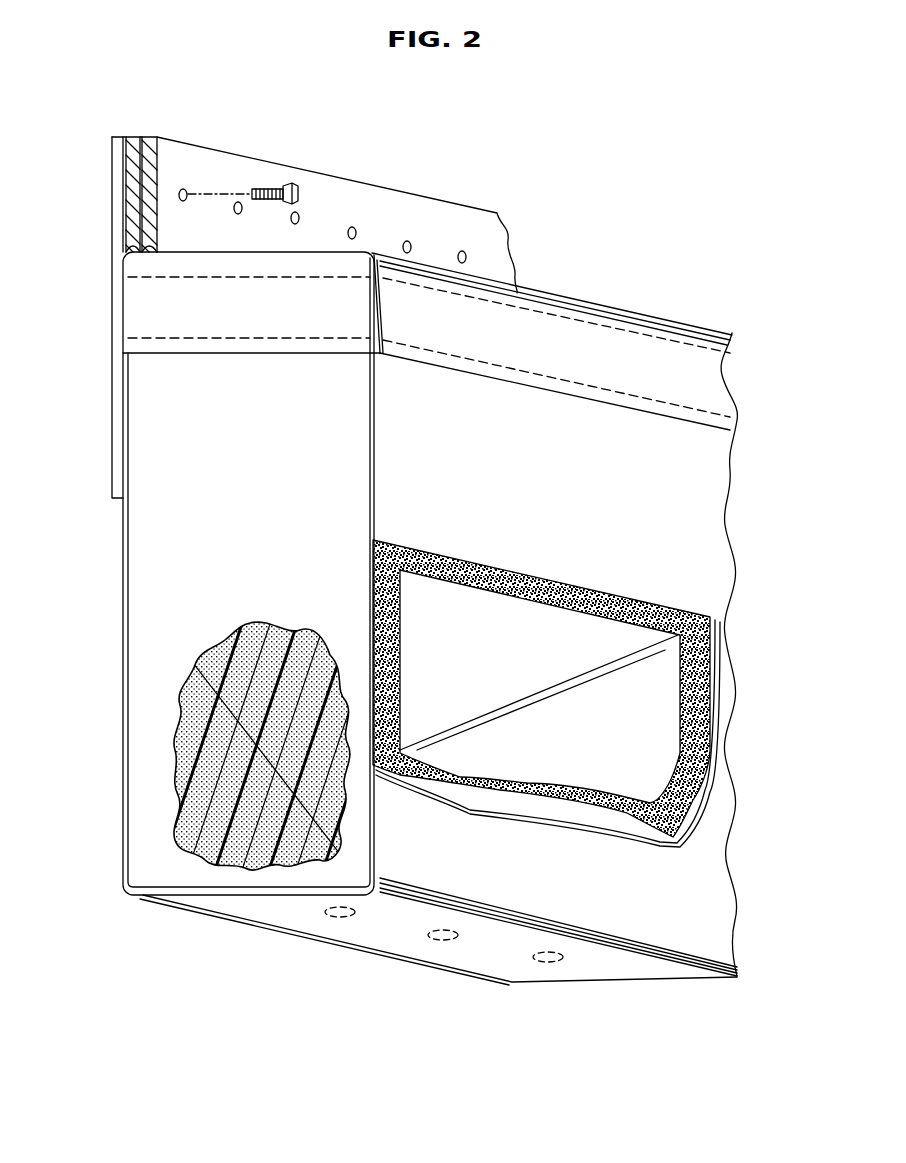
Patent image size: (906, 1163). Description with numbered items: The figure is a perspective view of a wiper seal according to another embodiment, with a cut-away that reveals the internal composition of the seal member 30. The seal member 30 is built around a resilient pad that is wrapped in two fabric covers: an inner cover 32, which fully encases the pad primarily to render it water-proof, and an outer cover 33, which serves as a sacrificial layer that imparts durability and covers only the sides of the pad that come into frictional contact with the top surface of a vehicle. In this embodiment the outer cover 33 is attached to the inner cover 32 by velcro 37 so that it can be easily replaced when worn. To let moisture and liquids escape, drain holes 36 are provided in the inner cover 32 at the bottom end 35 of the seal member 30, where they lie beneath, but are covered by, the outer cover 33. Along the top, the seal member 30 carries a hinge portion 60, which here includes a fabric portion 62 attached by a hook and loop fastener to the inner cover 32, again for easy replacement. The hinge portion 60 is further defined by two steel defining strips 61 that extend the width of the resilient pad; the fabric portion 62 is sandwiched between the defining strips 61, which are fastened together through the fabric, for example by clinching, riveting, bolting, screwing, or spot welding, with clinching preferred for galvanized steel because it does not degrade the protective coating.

The seal member 30 is at (147, 938).
The inner cover 32 is at (703, 515).
The outer cover 33 is at (703, 883).
The bottom end 35 is at (610, 967).
The drain hole 36 is at (335, 913).
The velcro 37 is at (708, 680).
The hinge portion 60 is at (284, 279).
The defining strip 61 is at (150, 138).
The fabric portion 62 is at (122, 168).